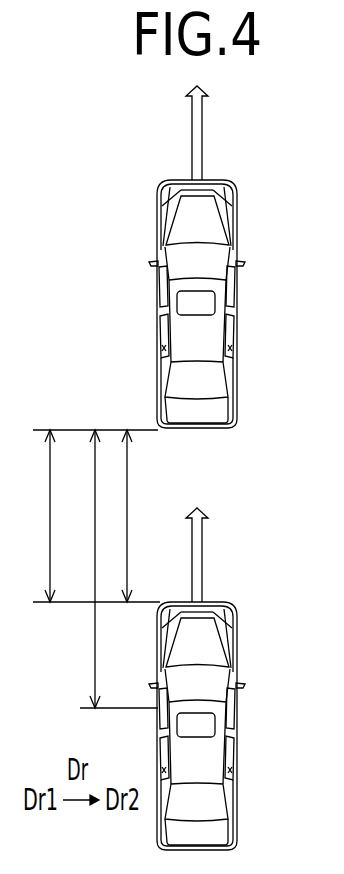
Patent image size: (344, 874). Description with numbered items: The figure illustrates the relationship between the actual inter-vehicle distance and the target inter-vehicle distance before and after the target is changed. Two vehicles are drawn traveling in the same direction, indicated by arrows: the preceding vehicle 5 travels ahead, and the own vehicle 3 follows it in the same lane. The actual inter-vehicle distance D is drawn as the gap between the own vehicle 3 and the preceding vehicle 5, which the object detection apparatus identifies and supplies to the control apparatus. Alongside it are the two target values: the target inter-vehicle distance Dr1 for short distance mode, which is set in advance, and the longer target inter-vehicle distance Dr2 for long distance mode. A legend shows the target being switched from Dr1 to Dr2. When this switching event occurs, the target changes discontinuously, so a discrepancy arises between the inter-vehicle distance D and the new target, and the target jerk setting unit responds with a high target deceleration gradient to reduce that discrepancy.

The preceding vehicle 5 is at (229, 243).
The own vehicle 3 is at (229, 673).
The inter-vehicle distance D is at (140, 516).
The target inter-vehicle distance for short distance mode Dr1 is at (66, 516).
The target inter-vehicle distance for long distance mode Dr2 is at (115, 569).